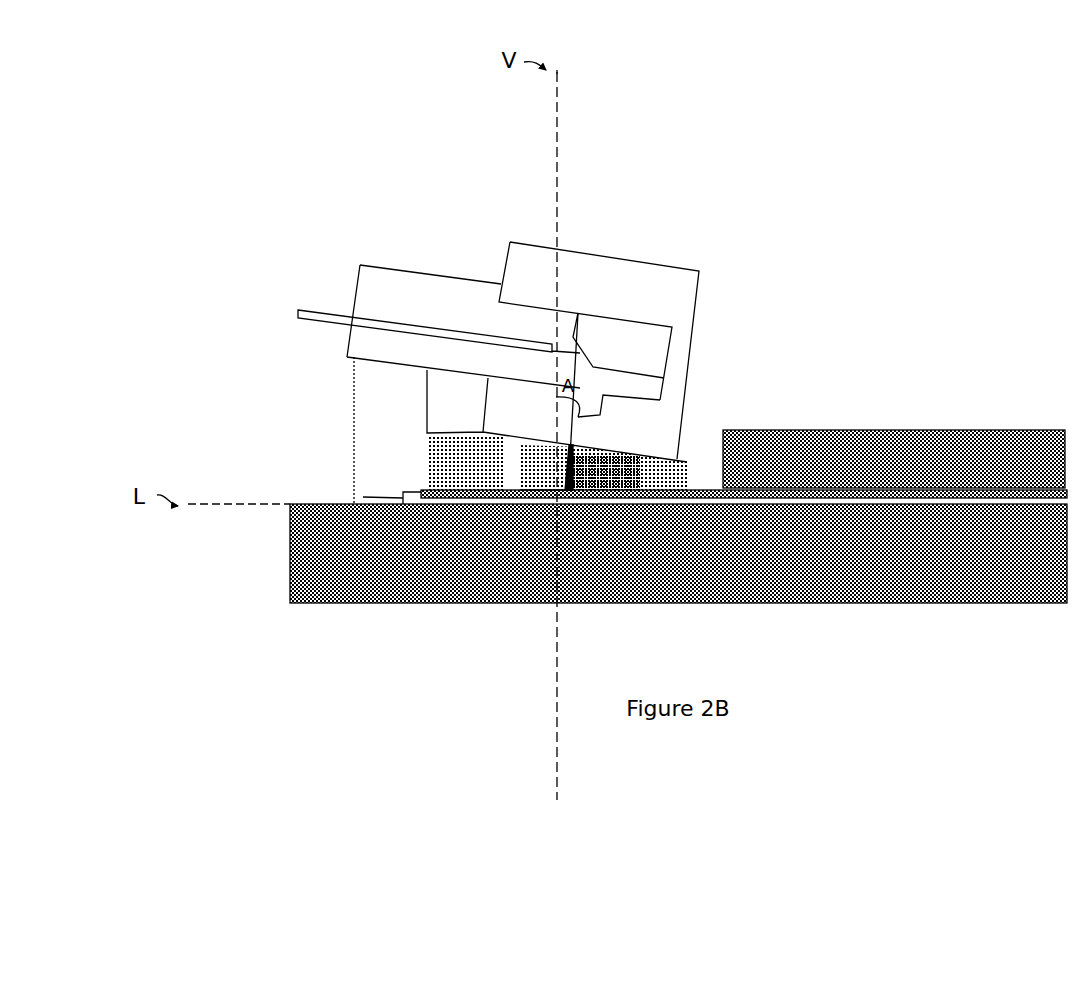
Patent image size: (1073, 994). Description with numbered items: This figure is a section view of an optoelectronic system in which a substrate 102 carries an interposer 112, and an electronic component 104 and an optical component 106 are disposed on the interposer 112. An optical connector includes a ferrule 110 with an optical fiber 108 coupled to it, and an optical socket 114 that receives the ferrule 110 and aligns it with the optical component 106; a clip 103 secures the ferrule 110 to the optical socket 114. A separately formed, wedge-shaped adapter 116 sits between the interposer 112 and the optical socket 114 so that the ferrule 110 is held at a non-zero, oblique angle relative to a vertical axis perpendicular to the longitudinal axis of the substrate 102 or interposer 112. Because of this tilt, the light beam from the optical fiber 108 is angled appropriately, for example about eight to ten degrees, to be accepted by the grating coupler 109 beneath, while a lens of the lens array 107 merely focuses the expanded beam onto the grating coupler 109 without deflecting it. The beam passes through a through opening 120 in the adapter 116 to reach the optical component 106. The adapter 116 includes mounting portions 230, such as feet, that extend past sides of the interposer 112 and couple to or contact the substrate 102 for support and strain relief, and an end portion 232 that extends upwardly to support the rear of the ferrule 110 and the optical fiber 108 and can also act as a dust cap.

The substrate 102 is at (661, 559).
The clip 103 is at (678, 273).
The electronic component 104 is at (856, 461).
The optical component 106 is at (525, 478).
The lens array 107 is at (582, 460).
The optical fiber 108 is at (340, 313).
The grating coupler 109 is at (555, 491).
The ferrule 110 is at (407, 273).
The interposer 112 is at (417, 492).
The optical socket 114 is at (613, 463).
The adapter 116 is at (427, 437).
The through opening 120 is at (652, 417).
The mounting portions 230 is at (363, 497).
The end portion 232 is at (380, 368).